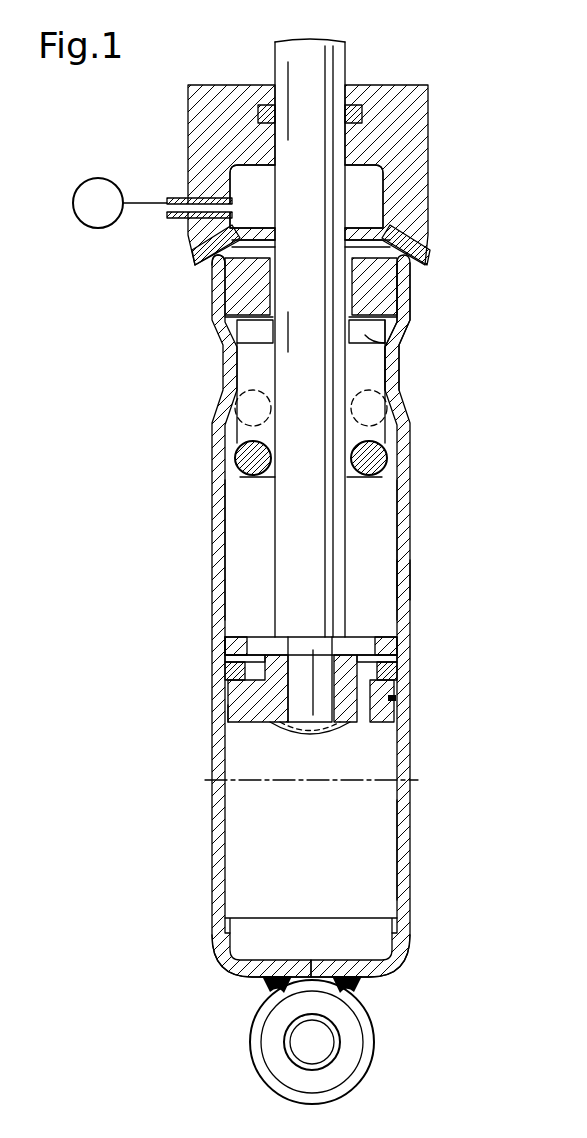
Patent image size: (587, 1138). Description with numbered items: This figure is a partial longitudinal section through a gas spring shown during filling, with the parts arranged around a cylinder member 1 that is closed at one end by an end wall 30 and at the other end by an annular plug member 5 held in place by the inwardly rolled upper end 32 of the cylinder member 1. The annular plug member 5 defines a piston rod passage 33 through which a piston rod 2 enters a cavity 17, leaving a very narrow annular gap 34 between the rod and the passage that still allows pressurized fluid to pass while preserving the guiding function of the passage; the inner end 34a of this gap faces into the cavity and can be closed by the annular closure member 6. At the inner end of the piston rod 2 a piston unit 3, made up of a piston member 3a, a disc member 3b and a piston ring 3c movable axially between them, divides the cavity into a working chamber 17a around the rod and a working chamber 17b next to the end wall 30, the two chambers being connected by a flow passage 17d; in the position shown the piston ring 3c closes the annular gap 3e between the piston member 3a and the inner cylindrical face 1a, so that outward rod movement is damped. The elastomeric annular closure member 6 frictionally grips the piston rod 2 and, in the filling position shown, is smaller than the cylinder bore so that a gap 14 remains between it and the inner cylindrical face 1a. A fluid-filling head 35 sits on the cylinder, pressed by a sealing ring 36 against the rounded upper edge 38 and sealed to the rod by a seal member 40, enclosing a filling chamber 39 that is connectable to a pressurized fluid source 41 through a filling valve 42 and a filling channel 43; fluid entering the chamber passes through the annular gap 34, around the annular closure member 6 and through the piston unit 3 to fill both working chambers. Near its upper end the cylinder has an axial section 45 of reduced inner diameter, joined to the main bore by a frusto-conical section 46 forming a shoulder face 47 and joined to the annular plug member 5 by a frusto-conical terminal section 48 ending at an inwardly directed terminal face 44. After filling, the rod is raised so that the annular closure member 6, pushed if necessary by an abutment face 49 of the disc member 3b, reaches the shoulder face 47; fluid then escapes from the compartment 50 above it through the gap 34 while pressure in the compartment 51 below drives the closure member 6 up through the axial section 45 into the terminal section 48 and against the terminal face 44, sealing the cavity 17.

The cylinder member 1 is at (444, 488).
The inner cylindrical face 1a is at (395, 878).
The piston rod 2 is at (283, 57).
The piston unit 3 is at (397, 692).
The piston member 3a is at (400, 725).
The disc member 3b is at (397, 626).
The piston ring 3c is at (397, 660).
The annular gap 3e is at (228, 720).
The annular plug member 5 is at (408, 285).
The annular closure member 6 is at (362, 474).
The gap 14 is at (236, 465).
The cavity 17 is at (384, 533).
The working chamber 17a is at (400, 585).
The working chamber 17b is at (385, 822).
The flow passage 17d is at (365, 722).
The end wall 30 is at (400, 968).
The upper end 32 is at (376, 240).
The piston rod passage 33 is at (372, 290).
The annular gap 34 is at (250, 290).
The inner end 34a is at (250, 340).
The fluid-filling head 35 is at (415, 112).
The sealing ring 36 is at (405, 240).
The rounded upper edge 38 is at (213, 262).
The filling chamber 39 is at (375, 170).
The seal member 40 is at (366, 105).
The pressurized fluid source 41 is at (98, 228).
The filling valve 42 is at (172, 198).
The filling channel 43 is at (218, 206).
The terminal face 44 is at (382, 358).
The axial section 45 is at (395, 383).
The frusto-conical section 46 is at (388, 413).
The shoulder face 47 is at (238, 410).
The terminal section 48 is at (388, 320).
The abutment face 49 is at (232, 640).
The compartment 50 is at (235, 370).
The compartment 51 is at (236, 525).